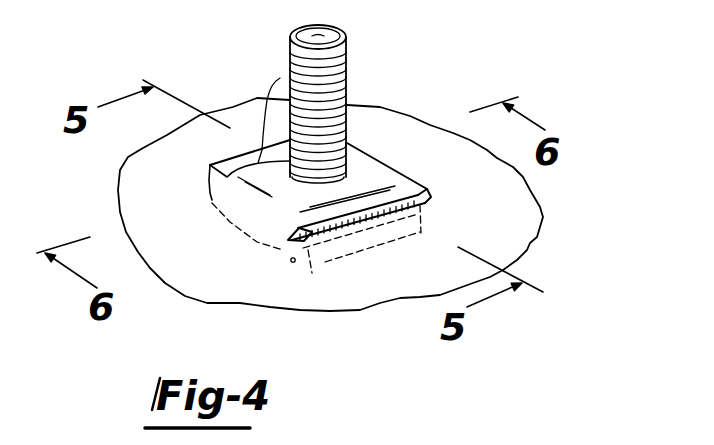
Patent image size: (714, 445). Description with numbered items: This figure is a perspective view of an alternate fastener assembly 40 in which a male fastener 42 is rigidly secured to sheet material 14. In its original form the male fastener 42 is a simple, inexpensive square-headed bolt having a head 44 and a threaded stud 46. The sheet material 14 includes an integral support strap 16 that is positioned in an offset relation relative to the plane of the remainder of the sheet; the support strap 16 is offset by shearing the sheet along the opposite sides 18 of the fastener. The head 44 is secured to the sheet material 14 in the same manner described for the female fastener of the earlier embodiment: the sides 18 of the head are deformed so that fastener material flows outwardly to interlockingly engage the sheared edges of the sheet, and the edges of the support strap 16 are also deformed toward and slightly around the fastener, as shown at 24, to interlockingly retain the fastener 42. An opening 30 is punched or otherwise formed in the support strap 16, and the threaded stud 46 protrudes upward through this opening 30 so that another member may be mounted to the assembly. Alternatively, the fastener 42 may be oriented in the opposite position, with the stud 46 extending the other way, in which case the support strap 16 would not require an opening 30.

The sheet material 14 is at (149, 163).
The support strap 16 is at (370, 158).
The opposite sides of fastener 18 is at (207, 197).
The deformed edges of support strap 24 is at (463, 173).
The opening 30 is at (345, 188).
The fastener assembly 40 is at (366, 133).
The male fastener 42 is at (282, 258).
The head 44 is at (222, 270).
The threaded stud 46 is at (345, 62).